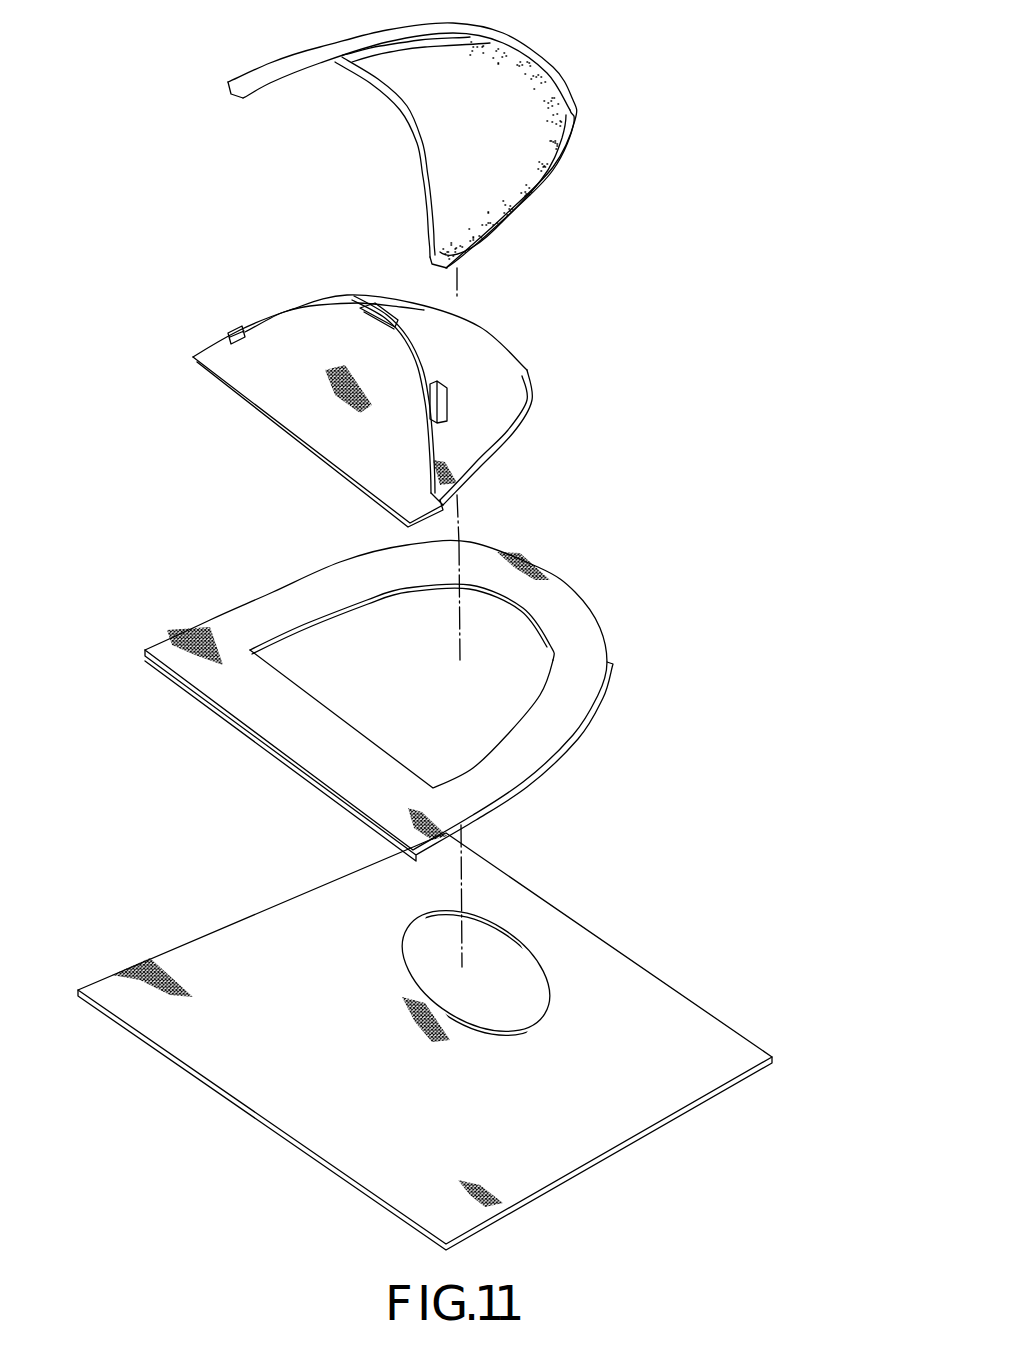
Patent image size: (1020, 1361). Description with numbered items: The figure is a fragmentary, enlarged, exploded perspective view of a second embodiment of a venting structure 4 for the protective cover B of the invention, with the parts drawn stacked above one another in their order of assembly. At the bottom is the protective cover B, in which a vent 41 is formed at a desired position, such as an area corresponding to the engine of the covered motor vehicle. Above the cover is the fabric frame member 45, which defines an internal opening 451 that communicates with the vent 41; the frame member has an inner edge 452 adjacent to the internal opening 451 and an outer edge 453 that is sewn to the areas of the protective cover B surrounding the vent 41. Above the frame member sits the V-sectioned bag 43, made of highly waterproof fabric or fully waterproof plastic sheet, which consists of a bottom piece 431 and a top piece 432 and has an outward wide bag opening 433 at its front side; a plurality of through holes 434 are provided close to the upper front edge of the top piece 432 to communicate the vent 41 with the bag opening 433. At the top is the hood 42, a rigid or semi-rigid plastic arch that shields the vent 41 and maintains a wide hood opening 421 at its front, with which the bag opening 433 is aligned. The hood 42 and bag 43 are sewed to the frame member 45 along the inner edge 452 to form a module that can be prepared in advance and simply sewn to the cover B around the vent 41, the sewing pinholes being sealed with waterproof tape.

The venting structure 4 is at (135, 735).
The hood 42 is at (516, 178).
The hood opening 421 is at (317, 79).
The V-sectioned bag 43 is at (527, 373).
The bottom piece 431 is at (365, 457).
The top piece 432 is at (447, 322).
The bag opening 433 is at (307, 323).
The through holes 434 is at (386, 303).
The fabric frame member 45 is at (605, 682).
The internal opening 451 is at (500, 627).
The inner edge 452 is at (503, 750).
The outer edge 453 is at (523, 770).
The vent 41 is at (523, 983).
The protective cover B is at (653, 1115).